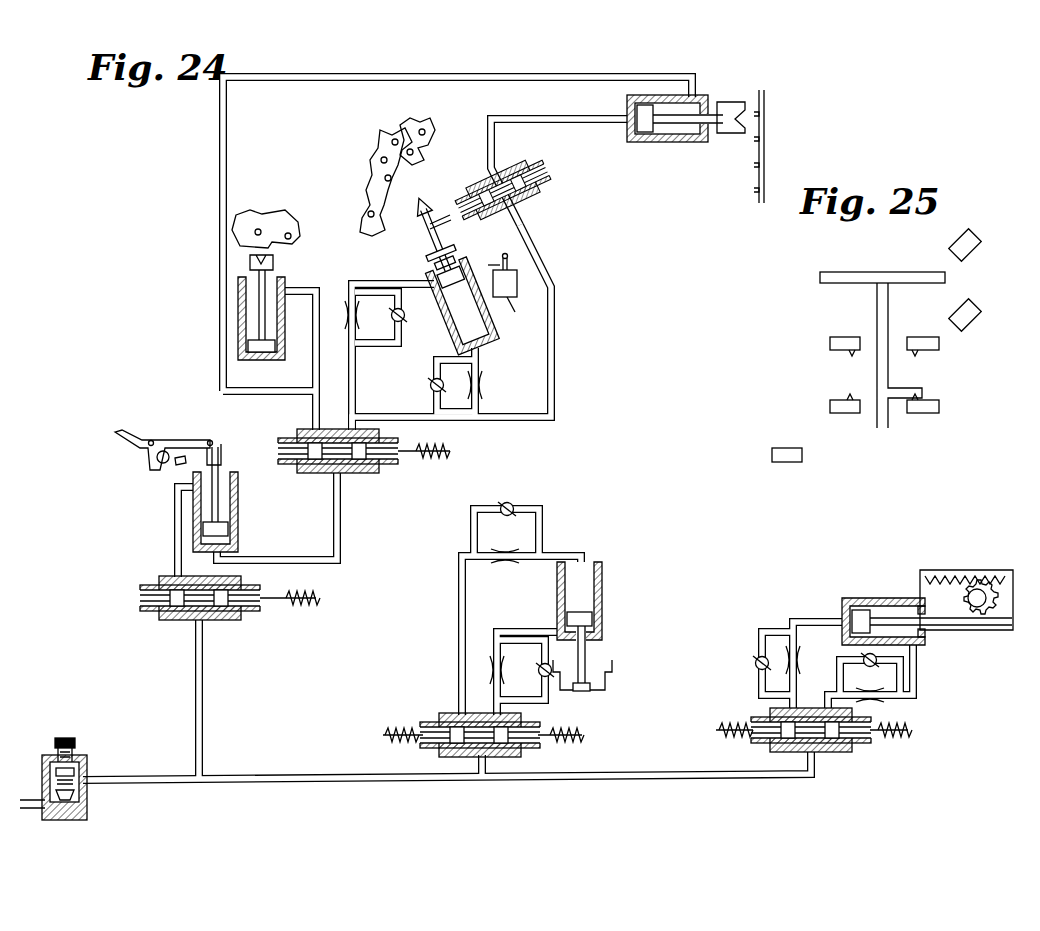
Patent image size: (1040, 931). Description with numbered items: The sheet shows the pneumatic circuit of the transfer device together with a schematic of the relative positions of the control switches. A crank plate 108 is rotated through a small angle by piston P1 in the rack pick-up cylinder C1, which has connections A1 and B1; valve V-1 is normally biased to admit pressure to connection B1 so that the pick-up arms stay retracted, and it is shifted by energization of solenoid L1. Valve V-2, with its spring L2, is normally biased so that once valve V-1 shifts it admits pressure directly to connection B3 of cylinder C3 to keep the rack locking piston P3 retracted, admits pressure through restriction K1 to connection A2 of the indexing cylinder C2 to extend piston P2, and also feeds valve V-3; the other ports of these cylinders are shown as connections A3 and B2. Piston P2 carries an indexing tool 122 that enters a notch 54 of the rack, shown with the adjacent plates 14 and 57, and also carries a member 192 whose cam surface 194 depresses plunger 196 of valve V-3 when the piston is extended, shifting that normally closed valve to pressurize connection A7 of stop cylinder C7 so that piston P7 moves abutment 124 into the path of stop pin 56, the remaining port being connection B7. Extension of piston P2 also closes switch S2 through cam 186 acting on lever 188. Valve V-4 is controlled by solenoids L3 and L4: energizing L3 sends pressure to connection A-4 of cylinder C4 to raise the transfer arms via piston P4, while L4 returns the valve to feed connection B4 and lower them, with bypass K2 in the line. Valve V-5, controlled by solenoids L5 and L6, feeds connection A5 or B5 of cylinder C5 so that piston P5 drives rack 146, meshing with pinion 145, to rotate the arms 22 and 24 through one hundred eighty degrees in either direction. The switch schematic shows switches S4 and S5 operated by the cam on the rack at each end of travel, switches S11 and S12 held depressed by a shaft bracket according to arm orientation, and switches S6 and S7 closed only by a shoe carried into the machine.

In FIG. 24, the cam plate 14 is at (367, 156).
In FIG. 24, the notch 54 is at (406, 140).
In FIG. 24, the lever plate 57 is at (260, 230).
In FIG. 24, the indexing tool 122 is at (427, 195).
In FIG. 24, the plunger 196 is at (440, 210).
In FIG. 24, the member 192 is at (428, 228).
In FIG. 24, the cam surface 194 is at (452, 263).
In FIG. 24, the lever 188 is at (492, 262).
In FIG. 24, the cam 186 is at (525, 310).
In FIG. 24, the switch S2 is at (516, 276).
In FIG. 25, the switch S2 is at (787, 467).
In FIG. 24, the piston P2 is at (430, 264).
In FIG. 24, the cylinder C2 is at (440, 340).
In FIG. 24, the fluid line B2 is at (401, 318).
In FIG. 24, the connection A2 is at (484, 350).
In FIG. 24, the restriction K1 is at (482, 384).
In FIG. 24, the piston P3 is at (274, 272).
In FIG. 24, the connection B3 is at (297, 296).
In FIG. 24, the cylinder C3 is at (238, 318).
In FIG. 24, the fluid line A3 is at (269, 379).
In FIG. 24, the crank plate 108 is at (172, 438).
In FIG. 24, the piston P1 is at (219, 460).
In FIG. 24, the connection B1 is at (185, 482).
In FIG. 24, the cylinder C1 is at (238, 512).
In FIG. 24, the fluid line A1 is at (232, 560).
In FIG. 24, the solenoid L1 is at (298, 590).
In FIG. 24, the valve V-1 is at (200, 615).
In FIG. 24, the valve V-2 is at (338, 470).
In FIG. 24, the valve spring L2 is at (435, 444).
In FIG. 24, the valve V-3 is at (511, 190).
In FIG. 24, the connection A7 is at (620, 117).
In FIG. 24, the cylinder C7 is at (664, 142).
In FIG. 24, the piston P7 is at (712, 135).
In FIG. 24, the fluid line B7 is at (694, 90).
In FIG. 24, the abutment 124 is at (740, 100).
In FIG. 24, the stop pin 56 is at (757, 180).
In FIG. 24, the connection B4 is at (574, 546).
In FIG. 24, the check valve bypass K2 is at (508, 560).
In FIG. 24, the connection A-4 is at (501, 635).
In FIG. 24, the cylinder C4 is at (603, 590).
In FIG. 24, the piston P4 is at (586, 655).
In FIG. 24, the solenoid L4 is at (387, 722).
In FIG. 24, the solenoid L3 is at (574, 735).
In FIG. 24, the valve V-4 is at (480, 745).
In FIG. 24, the connection A5 is at (822, 618).
In FIG. 24, the cylinder C5 is at (890, 598).
In FIG. 24, the pinion 145 is at (968, 582).
In FIG. 24, the rack 146 is at (1000, 630).
In FIG. 24, the piston P5 is at (925, 632).
In FIG. 24, the connection B5 is at (918, 672).
In FIG. 24, the solenoid L5 is at (730, 714).
In FIG. 24, the solenoid L6 is at (904, 724).
In FIG. 24, the valve V-5 is at (811, 746).
In FIG. 25, the arm 22 is at (830, 272).
In FIG. 25, the arm 24 is at (926, 272).
In FIG. 25, the switch S6 is at (966, 234).
In FIG. 25, the switch S7 is at (974, 310).
In FIG. 25, the switch S5 is at (845, 334).
In FIG. 25, the switch S4 is at (923, 334).
In FIG. 25, the switch S12 is at (844, 416).
In FIG. 25, the switch S11 is at (923, 416).